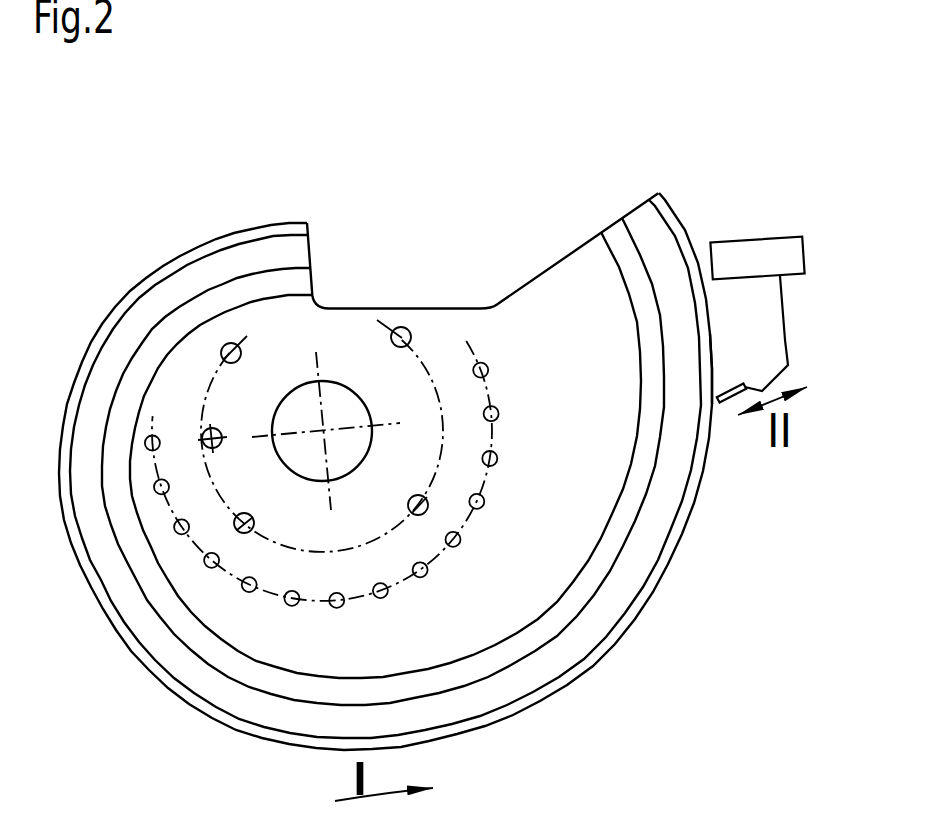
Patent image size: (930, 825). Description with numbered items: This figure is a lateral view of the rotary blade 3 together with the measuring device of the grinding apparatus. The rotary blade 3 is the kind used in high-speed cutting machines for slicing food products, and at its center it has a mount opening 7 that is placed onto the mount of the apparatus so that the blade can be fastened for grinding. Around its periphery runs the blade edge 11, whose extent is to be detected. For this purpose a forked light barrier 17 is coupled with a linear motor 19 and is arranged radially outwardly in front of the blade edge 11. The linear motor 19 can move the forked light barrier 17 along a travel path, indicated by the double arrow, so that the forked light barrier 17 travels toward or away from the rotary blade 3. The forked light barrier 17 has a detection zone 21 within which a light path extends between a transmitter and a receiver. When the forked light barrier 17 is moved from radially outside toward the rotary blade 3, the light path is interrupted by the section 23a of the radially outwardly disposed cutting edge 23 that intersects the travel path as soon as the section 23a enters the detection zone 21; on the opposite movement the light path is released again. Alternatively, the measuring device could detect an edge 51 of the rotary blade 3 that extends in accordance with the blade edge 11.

The rotary blade 3 is at (173, 185).
The mount opening 7 is at (337, 408).
The blade edge 11 is at (607, 632).
The forked light barrier 17 is at (790, 386).
The linear motor 19 is at (755, 238).
The detection zone 21 is at (725, 383).
The cutting edge 23 is at (678, 535).
The section 23a is at (715, 400).
The edge 51 is at (235, 679).